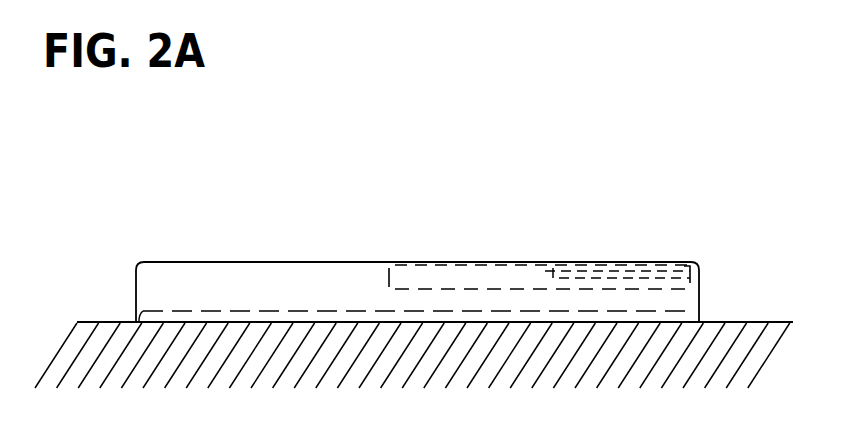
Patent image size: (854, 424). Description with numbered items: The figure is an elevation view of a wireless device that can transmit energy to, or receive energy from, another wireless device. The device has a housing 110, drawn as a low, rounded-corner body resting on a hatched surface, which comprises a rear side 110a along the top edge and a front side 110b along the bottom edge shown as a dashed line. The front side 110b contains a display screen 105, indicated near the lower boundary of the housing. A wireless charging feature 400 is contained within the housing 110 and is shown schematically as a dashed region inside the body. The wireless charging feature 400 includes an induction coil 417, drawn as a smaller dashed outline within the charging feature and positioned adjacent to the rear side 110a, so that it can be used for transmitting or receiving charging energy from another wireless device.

The housing 110 is at (706, 276).
The rear side 110a is at (279, 255).
The front side 110b is at (278, 310).
The display screen 105 is at (250, 307).
The wireless charging feature 400 is at (457, 271).
The induction coil 417 is at (628, 276).